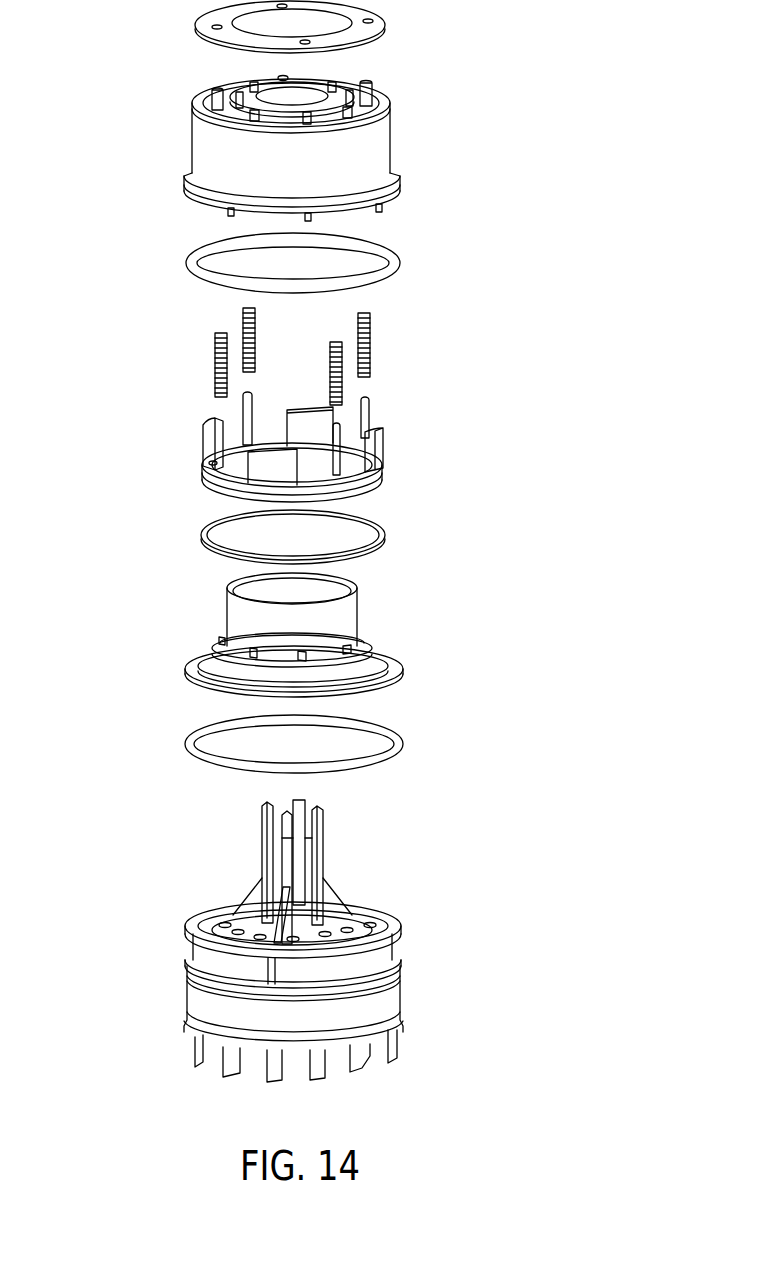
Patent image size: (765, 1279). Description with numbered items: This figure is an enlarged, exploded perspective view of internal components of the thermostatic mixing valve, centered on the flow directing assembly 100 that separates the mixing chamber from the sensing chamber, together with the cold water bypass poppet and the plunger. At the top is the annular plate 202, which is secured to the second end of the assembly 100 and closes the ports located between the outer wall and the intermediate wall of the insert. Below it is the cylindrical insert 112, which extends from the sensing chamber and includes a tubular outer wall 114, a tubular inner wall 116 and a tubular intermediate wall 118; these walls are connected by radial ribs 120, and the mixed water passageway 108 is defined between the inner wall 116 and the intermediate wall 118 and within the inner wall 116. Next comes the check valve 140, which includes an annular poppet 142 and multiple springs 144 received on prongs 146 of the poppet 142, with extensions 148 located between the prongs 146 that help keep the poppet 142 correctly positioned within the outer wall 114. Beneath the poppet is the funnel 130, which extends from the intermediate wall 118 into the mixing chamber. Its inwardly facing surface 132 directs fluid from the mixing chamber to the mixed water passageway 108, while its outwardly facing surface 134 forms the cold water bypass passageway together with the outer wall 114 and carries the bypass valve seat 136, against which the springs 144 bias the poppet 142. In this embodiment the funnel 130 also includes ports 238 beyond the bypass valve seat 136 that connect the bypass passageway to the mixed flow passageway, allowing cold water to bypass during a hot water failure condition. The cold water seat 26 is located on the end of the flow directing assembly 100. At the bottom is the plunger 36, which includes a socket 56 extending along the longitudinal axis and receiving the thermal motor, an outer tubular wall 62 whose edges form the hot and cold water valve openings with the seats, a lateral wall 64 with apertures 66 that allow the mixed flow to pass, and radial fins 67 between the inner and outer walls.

The annular plate 202 is at (381, 24).
The cylindrical insert 112 is at (388, 150).
The tubular outer wall 114 is at (385, 108).
The tubular inner wall 116 is at (262, 93).
The tubular intermediate wall 118 is at (352, 90).
The mixed water passageway 108 is at (237, 106).
The radial ribs 120 is at (348, 114).
The flow directing assembly 100 is at (89, 130).
The springs 144 is at (343, 373).
The prongs 146 is at (370, 413).
The poppet 142 is at (378, 488).
The extensions 148 is at (381, 456).
The check valve 140 is at (470, 310).
The funnel 130 is at (214, 613).
The inwardly facing surface 132 is at (332, 592).
The bypass valve seat 136 is at (372, 648).
The ports 238 is at (325, 652).
The outwardly facing surface 134 is at (370, 670).
The cold water seat 26 is at (207, 682).
The plunger 36 is at (323, 948).
The socket 56 is at (325, 822).
The apertures 66 is at (232, 922).
The lateral wall 64 is at (330, 920).
The outer tubular wall 62 is at (392, 1006).
The radial fins 67 is at (356, 1068).